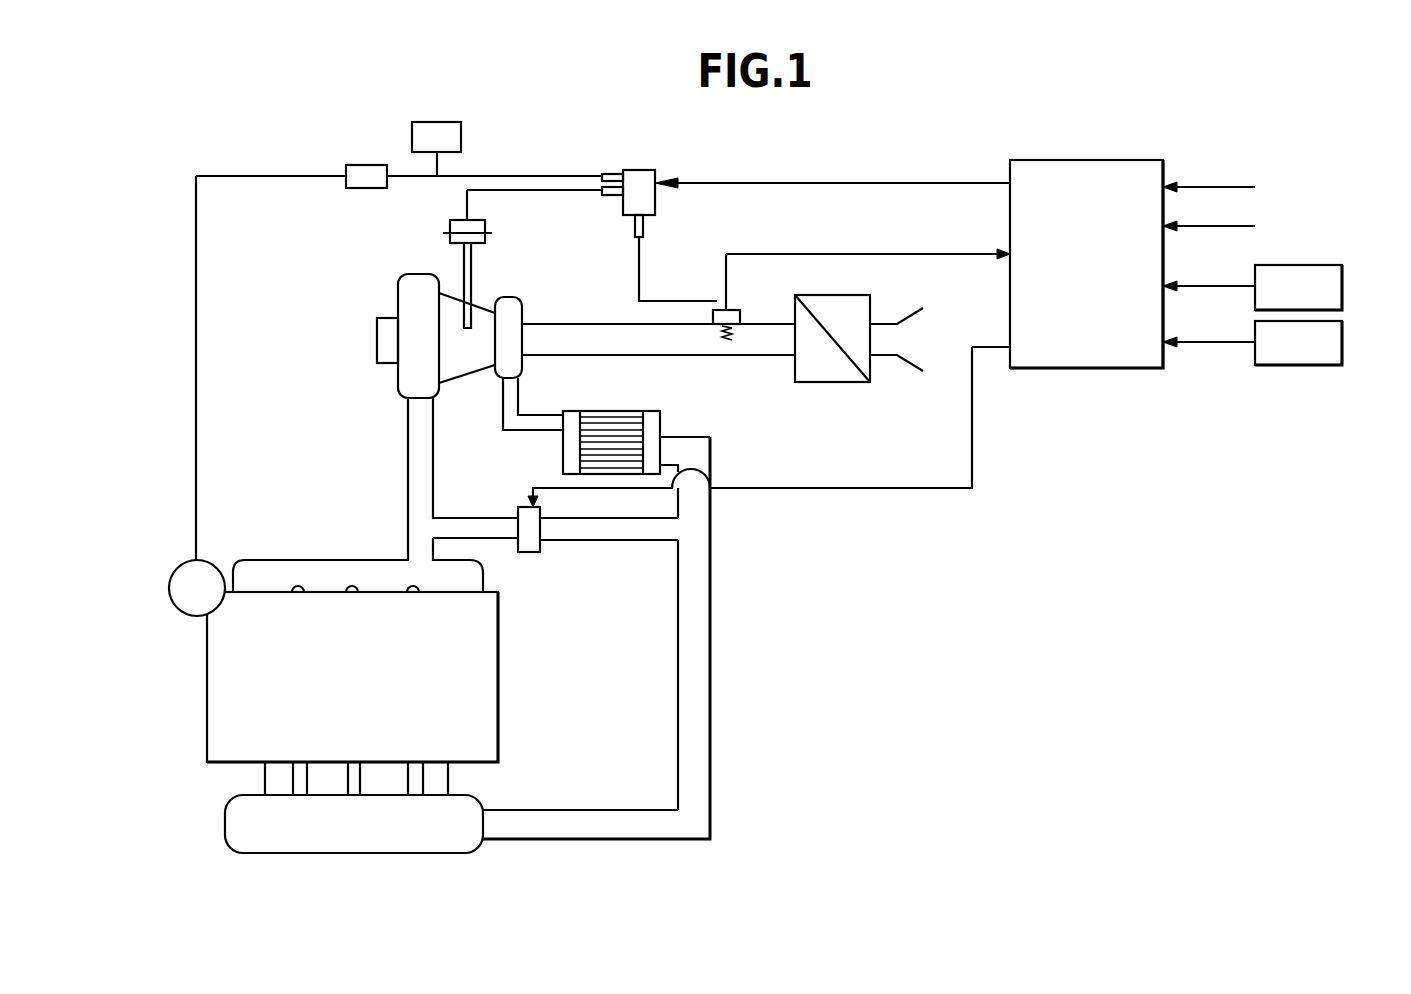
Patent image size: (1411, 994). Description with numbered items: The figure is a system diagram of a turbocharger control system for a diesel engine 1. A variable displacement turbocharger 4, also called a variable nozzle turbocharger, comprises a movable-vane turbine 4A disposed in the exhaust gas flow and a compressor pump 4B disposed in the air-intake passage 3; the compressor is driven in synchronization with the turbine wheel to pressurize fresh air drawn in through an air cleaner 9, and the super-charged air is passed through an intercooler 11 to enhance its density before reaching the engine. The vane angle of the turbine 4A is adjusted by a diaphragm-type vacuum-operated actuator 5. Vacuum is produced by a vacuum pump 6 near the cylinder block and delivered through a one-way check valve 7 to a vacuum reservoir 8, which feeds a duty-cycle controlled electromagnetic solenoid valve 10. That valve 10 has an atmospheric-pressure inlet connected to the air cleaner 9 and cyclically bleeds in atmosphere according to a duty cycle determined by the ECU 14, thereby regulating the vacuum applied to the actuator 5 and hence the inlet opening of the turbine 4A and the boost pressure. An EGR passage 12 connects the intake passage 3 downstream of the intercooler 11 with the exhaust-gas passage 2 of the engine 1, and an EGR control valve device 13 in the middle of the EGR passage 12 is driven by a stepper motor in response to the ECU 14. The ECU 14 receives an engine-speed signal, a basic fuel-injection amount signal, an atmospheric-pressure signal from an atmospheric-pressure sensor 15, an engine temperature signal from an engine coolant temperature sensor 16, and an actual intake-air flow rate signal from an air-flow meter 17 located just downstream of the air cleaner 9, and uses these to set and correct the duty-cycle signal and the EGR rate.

The diesel engine 1 is at (207, 688).
The exhaust-gas passage 2 is at (408, 452).
The air-intake passage 3 is at (527, 428).
The variable displacement turbocharger 4 is at (414, 302).
The movable-vane turbine 4A is at (412, 285).
The compressor pump 4B is at (510, 300).
The actuator 5 is at (485, 223).
The vacuum pump 6 is at (169, 588).
The one-way check valve 7 is at (352, 165).
The vacuum reservoir 8 is at (461, 132).
The air cleaner 9 is at (870, 303).
The duty-cycle controlled electromagnetic solenoid valve 10 is at (655, 203).
The intercooler 11 is at (660, 417).
The EGR passage 12 is at (545, 530).
The EGR control valve device 13 is at (532, 552).
The electronic engine control unit 14 is at (1090, 160).
The atmospheric-pressure sensor 15 is at (1342, 283).
The engine coolant temperature sensor 16 is at (1342, 338).
The air-flow meter 17 is at (713, 310).